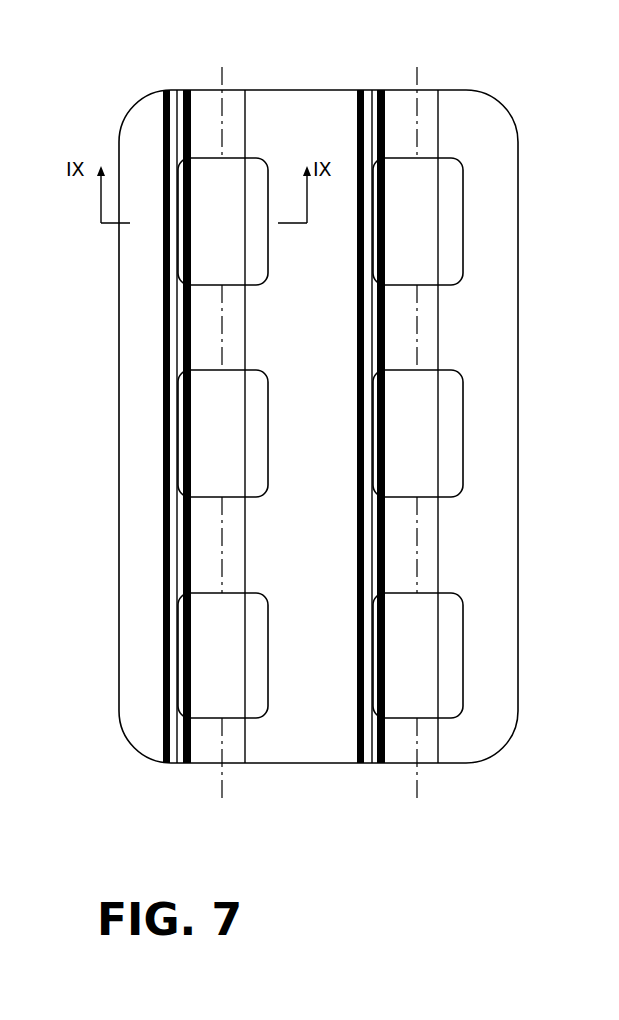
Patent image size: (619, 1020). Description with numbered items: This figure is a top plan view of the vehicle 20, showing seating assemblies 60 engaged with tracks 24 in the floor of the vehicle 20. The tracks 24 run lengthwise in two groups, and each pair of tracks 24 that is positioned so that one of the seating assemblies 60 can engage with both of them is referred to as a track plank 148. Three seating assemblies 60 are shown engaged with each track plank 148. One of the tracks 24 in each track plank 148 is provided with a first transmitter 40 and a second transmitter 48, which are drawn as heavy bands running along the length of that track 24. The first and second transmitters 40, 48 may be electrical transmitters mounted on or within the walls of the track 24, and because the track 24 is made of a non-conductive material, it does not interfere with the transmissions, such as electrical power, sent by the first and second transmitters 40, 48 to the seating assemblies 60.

The vehicle 20 is at (110, 108).
The track 24 is at (304, 431).
The first transmitter 40 is at (163, 745).
The second transmitter 48 is at (199, 766).
The seating assembly 60 is at (212, 285).
The track plank 148 is at (238, 762).